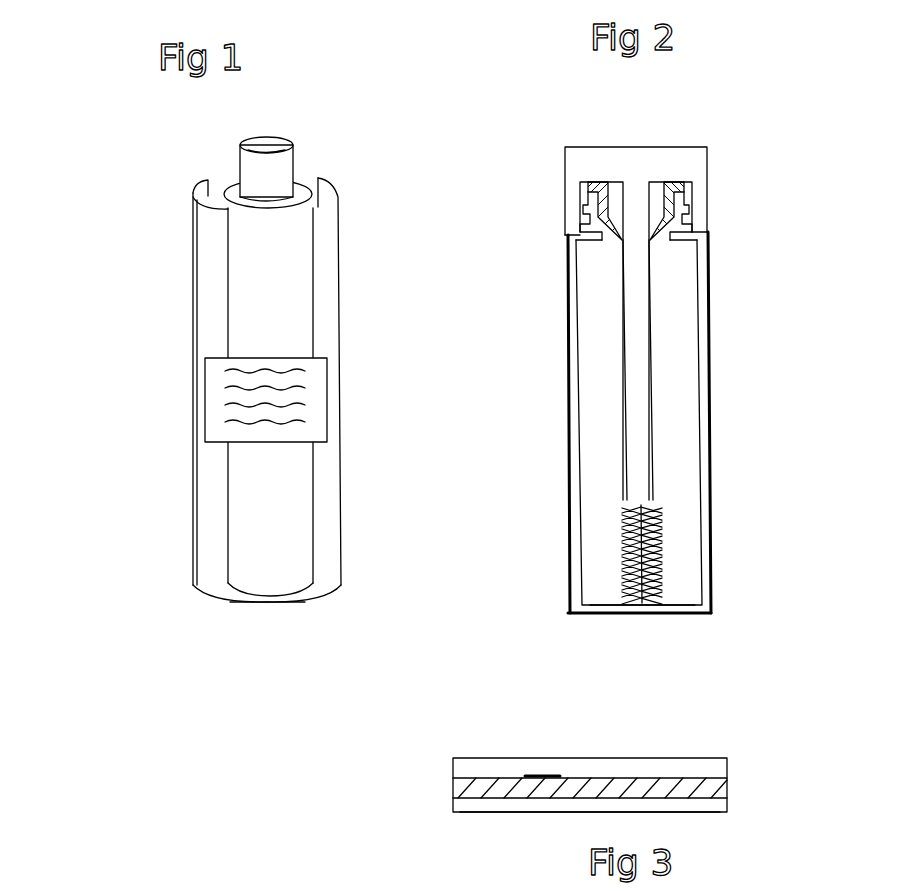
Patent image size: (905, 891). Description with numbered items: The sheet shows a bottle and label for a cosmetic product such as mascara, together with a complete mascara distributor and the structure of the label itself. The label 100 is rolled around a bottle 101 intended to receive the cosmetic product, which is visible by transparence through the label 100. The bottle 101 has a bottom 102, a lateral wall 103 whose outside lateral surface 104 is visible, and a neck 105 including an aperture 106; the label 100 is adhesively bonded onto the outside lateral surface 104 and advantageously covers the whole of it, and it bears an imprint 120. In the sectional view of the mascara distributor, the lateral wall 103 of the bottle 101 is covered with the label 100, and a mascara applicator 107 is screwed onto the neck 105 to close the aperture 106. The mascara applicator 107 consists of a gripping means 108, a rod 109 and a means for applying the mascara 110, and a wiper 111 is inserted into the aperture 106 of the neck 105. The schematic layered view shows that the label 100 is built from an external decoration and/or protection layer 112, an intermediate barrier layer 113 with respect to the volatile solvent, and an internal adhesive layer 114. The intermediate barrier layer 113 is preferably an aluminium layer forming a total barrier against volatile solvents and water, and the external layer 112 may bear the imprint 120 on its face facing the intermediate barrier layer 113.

In FIG. 1, the label 100 is at (327, 336).
In FIG. 2, the label 100 is at (712, 410).
In FIG. 3, the label 100 is at (652, 748).
In FIG. 1, the bottle 101 is at (322, 155).
In FIG. 2, the bottle 101 is at (580, 628).
In FIG. 1, the bottom 102 is at (267, 600).
In FIG. 2, the bottom 102 is at (645, 613).
In FIG. 1, the lateral wall 103 is at (292, 488).
In FIG. 2, the lateral wall 103 is at (703, 476).
In FIG. 1, the outside lateral surface 104 is at (350, 388).
In FIG. 1, the neck 105 is at (273, 173).
In FIG. 2, the neck 105 is at (587, 212).
In FIG. 1, the aperture 106 is at (263, 150).
In FIG. 2, the mascara applicator 107 is at (669, 296).
In FIG. 2, the gripping means 108 is at (677, 167).
In FIG. 2, the rod 109 is at (635, 352).
In FIG. 2, the means for applying the mascara 110 is at (657, 543).
In FIG. 2, the wiper 111 is at (672, 214).
In FIG. 3, the external decoration and/or protection layer 112 is at (463, 768).
In FIG. 3, the intermediate barrier layer 113 is at (707, 790).
In FIG. 3, the internal adhesive layer 114 is at (480, 805).
In FIG. 1, the imprint 120 is at (205, 405).
In FIG. 3, the imprint 120 is at (545, 775).